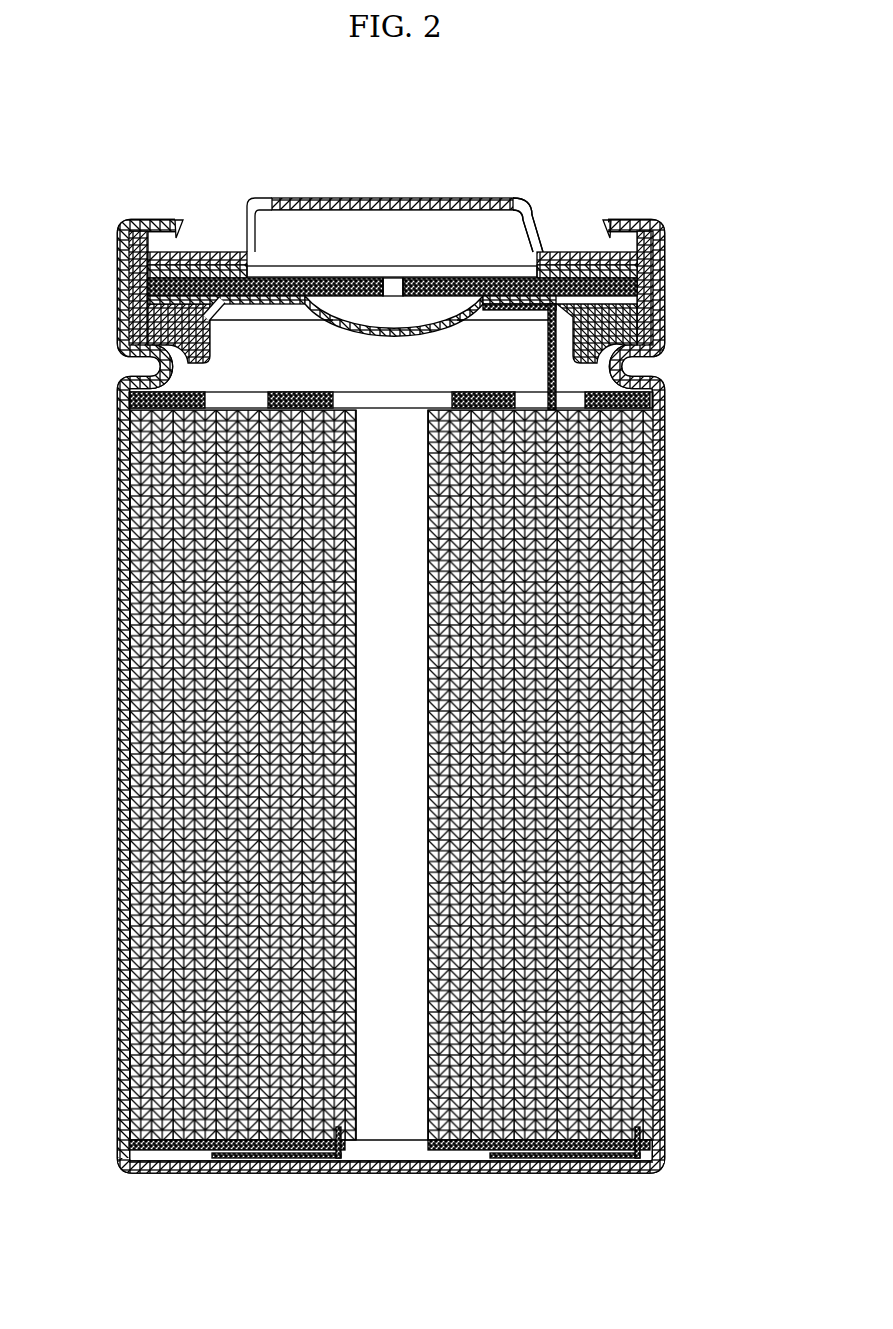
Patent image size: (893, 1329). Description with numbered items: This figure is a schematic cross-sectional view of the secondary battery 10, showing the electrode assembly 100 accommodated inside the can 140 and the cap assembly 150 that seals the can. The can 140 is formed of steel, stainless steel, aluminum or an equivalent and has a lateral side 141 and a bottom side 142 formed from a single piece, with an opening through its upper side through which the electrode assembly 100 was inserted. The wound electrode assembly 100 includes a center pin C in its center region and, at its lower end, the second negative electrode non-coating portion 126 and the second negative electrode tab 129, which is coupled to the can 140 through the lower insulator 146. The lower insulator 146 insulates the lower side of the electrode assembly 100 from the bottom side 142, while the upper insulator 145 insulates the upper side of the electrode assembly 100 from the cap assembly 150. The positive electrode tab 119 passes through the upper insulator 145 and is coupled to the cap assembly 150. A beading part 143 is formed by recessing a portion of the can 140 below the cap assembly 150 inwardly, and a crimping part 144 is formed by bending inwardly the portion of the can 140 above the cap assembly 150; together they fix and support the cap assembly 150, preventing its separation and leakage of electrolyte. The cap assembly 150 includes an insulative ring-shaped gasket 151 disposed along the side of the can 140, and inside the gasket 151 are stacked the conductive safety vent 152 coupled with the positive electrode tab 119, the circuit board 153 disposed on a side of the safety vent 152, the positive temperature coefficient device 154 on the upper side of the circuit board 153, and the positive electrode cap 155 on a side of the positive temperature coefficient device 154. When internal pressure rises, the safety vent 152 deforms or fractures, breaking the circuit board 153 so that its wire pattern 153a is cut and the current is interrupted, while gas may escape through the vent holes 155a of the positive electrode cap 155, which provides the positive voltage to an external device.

The secondary battery 10 is at (696, 124).
The electrode assembly 100 is at (656, 643).
The positive electrode tab 119 is at (548, 360).
The second negative electrode non-coating portion 126 is at (287, 1158).
The second negative electrode tab 129 is at (500, 1158).
The can 140 is at (668, 968).
The lateral side 141 is at (660, 1035).
The bottom side 142 is at (612, 1170).
The beading part 143 is at (626, 373).
The crimping part 144 is at (152, 221).
The upper insulator 145 is at (632, 400).
The lower insulator 146 is at (432, 1162).
The cap assembly 150 is at (345, 194).
The gasket 151 is at (630, 240).
The safety vent 152 is at (150, 303).
The circuit board 153 is at (150, 286).
The wire pattern 153a is at (446, 290).
The positive temperature coefficient (PTC) device 154 is at (577, 268).
The positive electrode cap 155 is at (212, 251).
The vent hole 155a is at (533, 212).
The center pin C is at (420, 734).